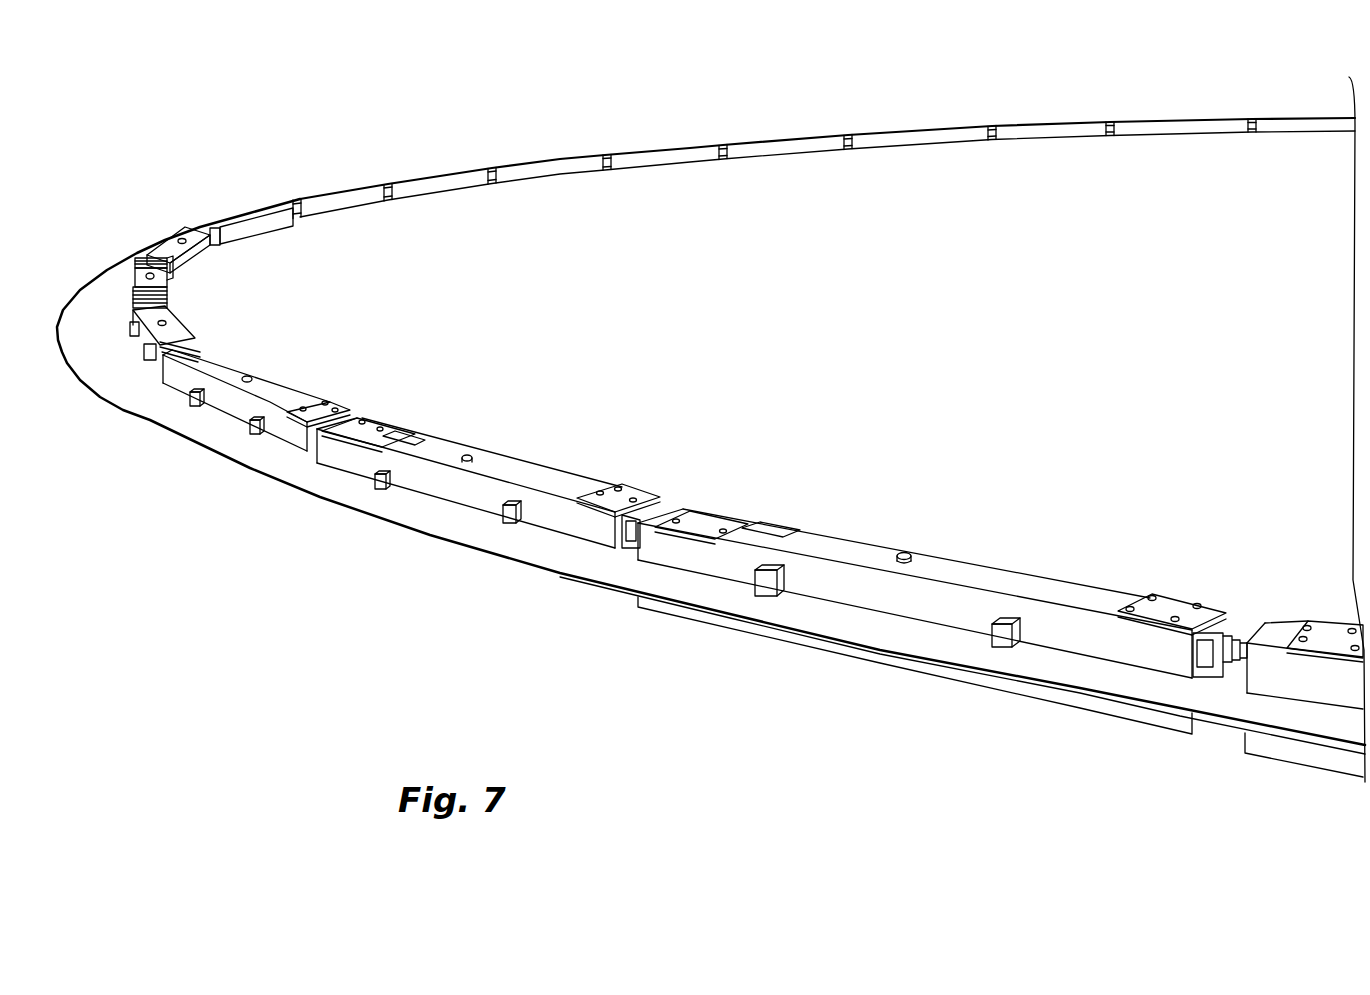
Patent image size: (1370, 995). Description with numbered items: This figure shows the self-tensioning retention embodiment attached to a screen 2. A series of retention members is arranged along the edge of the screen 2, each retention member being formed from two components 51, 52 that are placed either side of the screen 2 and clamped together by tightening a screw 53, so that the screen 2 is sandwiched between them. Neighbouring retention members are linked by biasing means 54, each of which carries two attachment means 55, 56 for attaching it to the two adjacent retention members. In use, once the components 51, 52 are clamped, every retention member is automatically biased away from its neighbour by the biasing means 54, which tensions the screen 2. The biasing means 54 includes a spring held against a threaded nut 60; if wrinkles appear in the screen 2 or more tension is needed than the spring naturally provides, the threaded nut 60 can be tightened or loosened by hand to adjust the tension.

The screen 2 is at (447, 225).
The component 51 is at (680, 617).
The component 52 is at (840, 550).
The screw 53 is at (910, 556).
The biasing means 54 is at (630, 555).
The attachment means 55 is at (612, 497).
The attachment means 56 is at (708, 525).
The threaded nut 60 is at (883, 618).